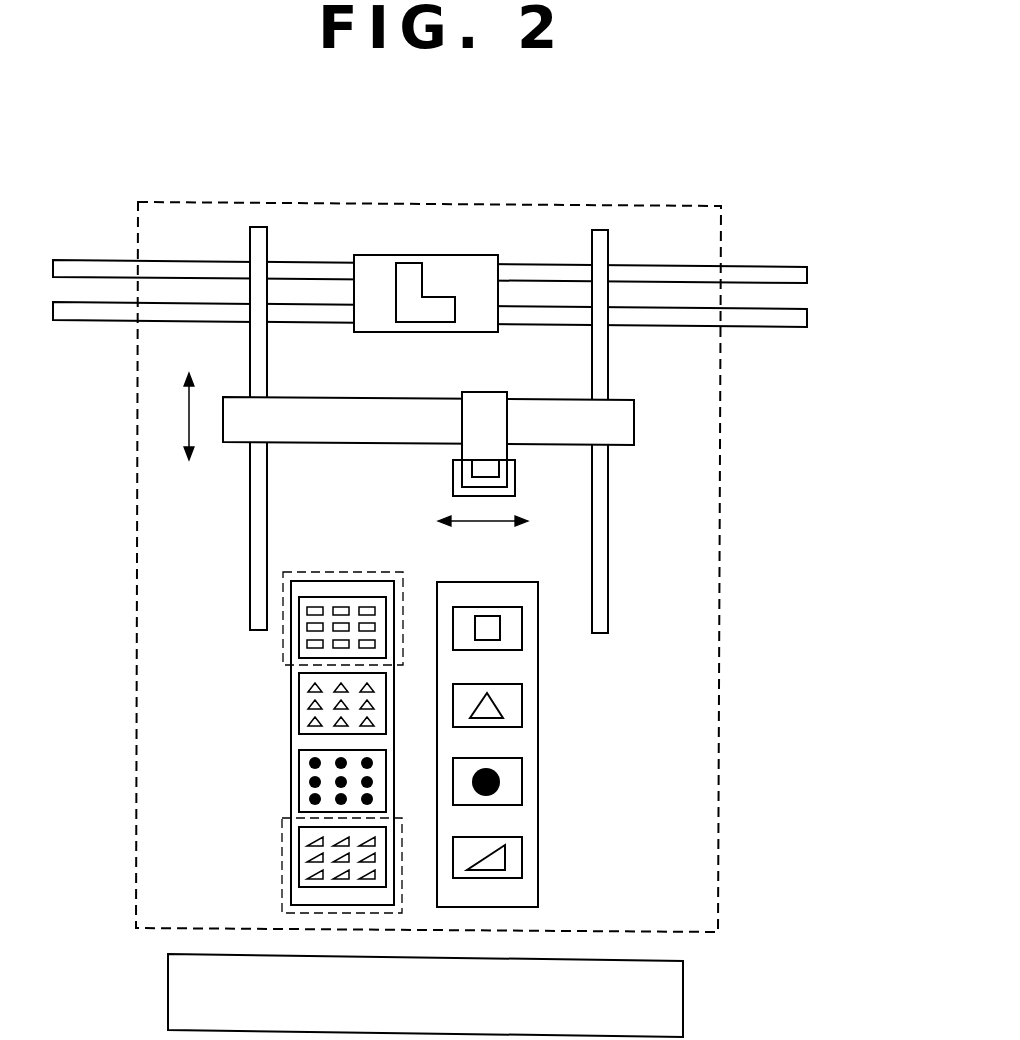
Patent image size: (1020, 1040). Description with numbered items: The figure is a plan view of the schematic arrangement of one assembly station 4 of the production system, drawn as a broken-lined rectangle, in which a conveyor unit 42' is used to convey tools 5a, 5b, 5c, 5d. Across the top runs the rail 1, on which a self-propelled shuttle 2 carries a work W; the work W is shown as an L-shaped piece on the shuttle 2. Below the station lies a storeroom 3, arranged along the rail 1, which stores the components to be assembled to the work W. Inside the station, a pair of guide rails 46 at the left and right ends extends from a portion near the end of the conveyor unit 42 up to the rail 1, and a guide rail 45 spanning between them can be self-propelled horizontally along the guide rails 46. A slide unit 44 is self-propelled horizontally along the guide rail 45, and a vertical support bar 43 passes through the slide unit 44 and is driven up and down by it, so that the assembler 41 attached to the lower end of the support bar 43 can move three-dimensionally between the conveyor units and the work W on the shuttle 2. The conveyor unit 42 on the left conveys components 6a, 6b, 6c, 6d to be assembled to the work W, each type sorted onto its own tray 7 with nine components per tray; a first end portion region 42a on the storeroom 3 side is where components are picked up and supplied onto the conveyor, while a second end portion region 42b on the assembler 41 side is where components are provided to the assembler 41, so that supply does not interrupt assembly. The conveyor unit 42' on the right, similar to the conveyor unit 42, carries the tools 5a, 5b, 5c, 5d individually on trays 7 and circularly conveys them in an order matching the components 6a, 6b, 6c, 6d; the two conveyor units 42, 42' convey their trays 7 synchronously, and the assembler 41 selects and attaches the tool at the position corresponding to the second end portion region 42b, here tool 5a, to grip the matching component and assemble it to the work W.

The rail 1 is at (807, 276).
The shuttle 2 is at (462, 255).
The work W is at (405, 274).
The storeroom 3 is at (683, 996).
The assembly station 4 is at (651, 204).
The tool 5a is at (487, 628).
The tool 5b is at (487, 710).
The tool 5c is at (486, 780).
The tool 5d is at (487, 868).
The component 6a is at (315, 611).
The component 6b is at (313, 721).
The component 6c is at (308, 765).
The component 6d is at (313, 870).
The tray 7 is at (300, 700).
The assembler 41 is at (440, 477).
The conveyor unit 42 is at (281, 752).
The conveyor unit 42' is at (550, 756).
The first end portion region 42a is at (283, 862).
The second end portion region 42b is at (380, 571).
The support bar 43 is at (485, 468).
The slide unit 44 is at (483, 392).
The guide rail 45 is at (622, 420).
The guide rails 46 is at (256, 348).